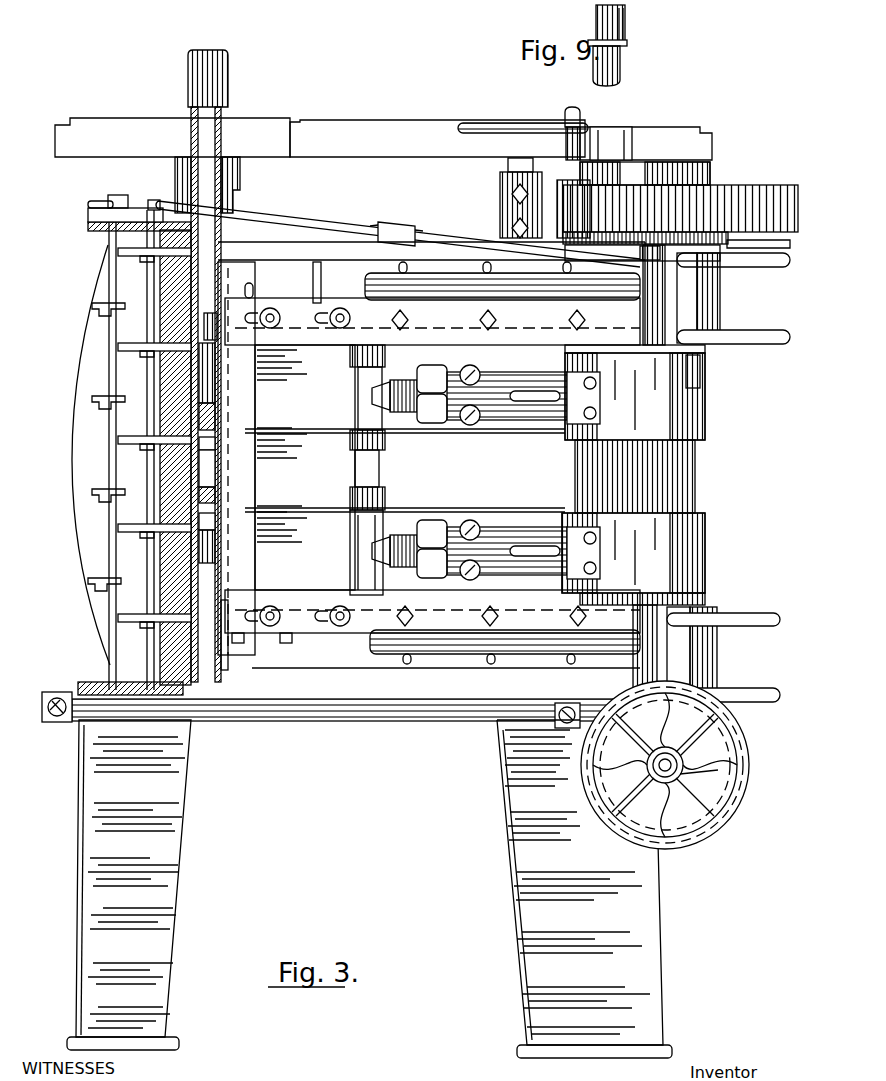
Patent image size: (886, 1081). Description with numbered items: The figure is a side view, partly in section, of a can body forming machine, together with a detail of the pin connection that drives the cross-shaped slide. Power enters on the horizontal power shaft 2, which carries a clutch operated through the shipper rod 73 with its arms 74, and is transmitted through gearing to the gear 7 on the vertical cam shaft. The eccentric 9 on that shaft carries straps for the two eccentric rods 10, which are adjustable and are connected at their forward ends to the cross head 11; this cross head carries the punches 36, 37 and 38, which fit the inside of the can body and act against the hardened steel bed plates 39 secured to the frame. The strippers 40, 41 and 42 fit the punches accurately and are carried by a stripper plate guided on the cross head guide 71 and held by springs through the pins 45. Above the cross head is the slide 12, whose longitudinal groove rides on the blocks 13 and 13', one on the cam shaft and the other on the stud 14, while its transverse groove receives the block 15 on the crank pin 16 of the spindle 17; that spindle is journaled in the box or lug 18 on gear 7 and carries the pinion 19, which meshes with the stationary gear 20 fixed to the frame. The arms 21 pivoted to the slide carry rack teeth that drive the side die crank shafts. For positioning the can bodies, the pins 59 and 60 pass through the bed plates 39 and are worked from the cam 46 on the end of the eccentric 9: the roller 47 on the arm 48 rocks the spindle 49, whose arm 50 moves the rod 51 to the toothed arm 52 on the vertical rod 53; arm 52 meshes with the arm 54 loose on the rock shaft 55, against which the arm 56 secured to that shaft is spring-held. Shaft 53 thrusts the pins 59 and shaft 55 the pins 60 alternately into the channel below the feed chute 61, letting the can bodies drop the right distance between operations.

In FIG. 3, the power shaft 2 is at (683, 767).
In FIG. 3, the gear 7 is at (755, 194).
In FIG. 3, the eccentric 9 is at (682, 491).
In FIG. 3, the eccentric rods 10 is at (722, 552).
In FIG. 3, the cross head 11 is at (305, 467).
In FIG. 3, the slide 12 is at (437, 138).
In FIG. 3, the block 13 is at (670, 142).
In FIG. 3, the block 13' is at (523, 114).
In FIG. 3, the stud 14 is at (502, 170).
In FIG. 9, the block 15 is at (600, 20).
In FIG. 3, the block 15 is at (608, 143).
In FIG. 9, the crank pin 16 is at (612, 26).
In FIG. 9, the spindle 17 is at (620, 62).
In FIG. 3, the box or lug 18 is at (618, 177).
In FIG. 3, the pinion 19 is at (560, 228).
In FIG. 3, the stationary gear 20 is at (790, 247).
In FIG. 3, the arms 21 is at (322, 136).
In FIG. 3, the punch 36 is at (215, 375).
In FIG. 3, the punch 37 is at (204, 472).
In FIG. 3, the punch 38 is at (202, 558).
In FIG. 3, the bed plates 39 is at (196, 447).
In FIG. 3, the stripper 40 is at (216, 412).
In FIG. 3, the stripper 41 is at (216, 504).
In FIG. 3, the stripper 42 is at (253, 587).
In FIG. 3, the pins 45 is at (207, 313).
In FIG. 3, the cam 46 is at (572, 350).
In FIG. 3, the roller 47 is at (700, 368).
In FIG. 3, the arm 48 is at (678, 340).
In FIG. 3, the spindle 49 is at (622, 331).
In FIG. 3, the arm 50 is at (640, 262).
In FIG. 3, the rod 51 is at (335, 222).
In FIG. 3, the arm 52 is at (156, 200).
In FIG. 3, the vertical rod 53 is at (147, 550).
In FIG. 3, the arm 54 is at (120, 208).
In FIG. 3, the rock shaft 55 is at (109, 278).
In FIG. 3, the arm 56 is at (97, 200).
In FIG. 3, the pins 59 is at (120, 252).
In FIG. 3, the pins 60 is at (92, 305).
In FIG. 3, the feed chute 61 is at (210, 133).
In FIG. 3, the cross head guide 71 is at (297, 469).
In FIG. 3, the shipper rod 73 is at (382, 721).
In FIG. 3, the arms 74 is at (56, 720).